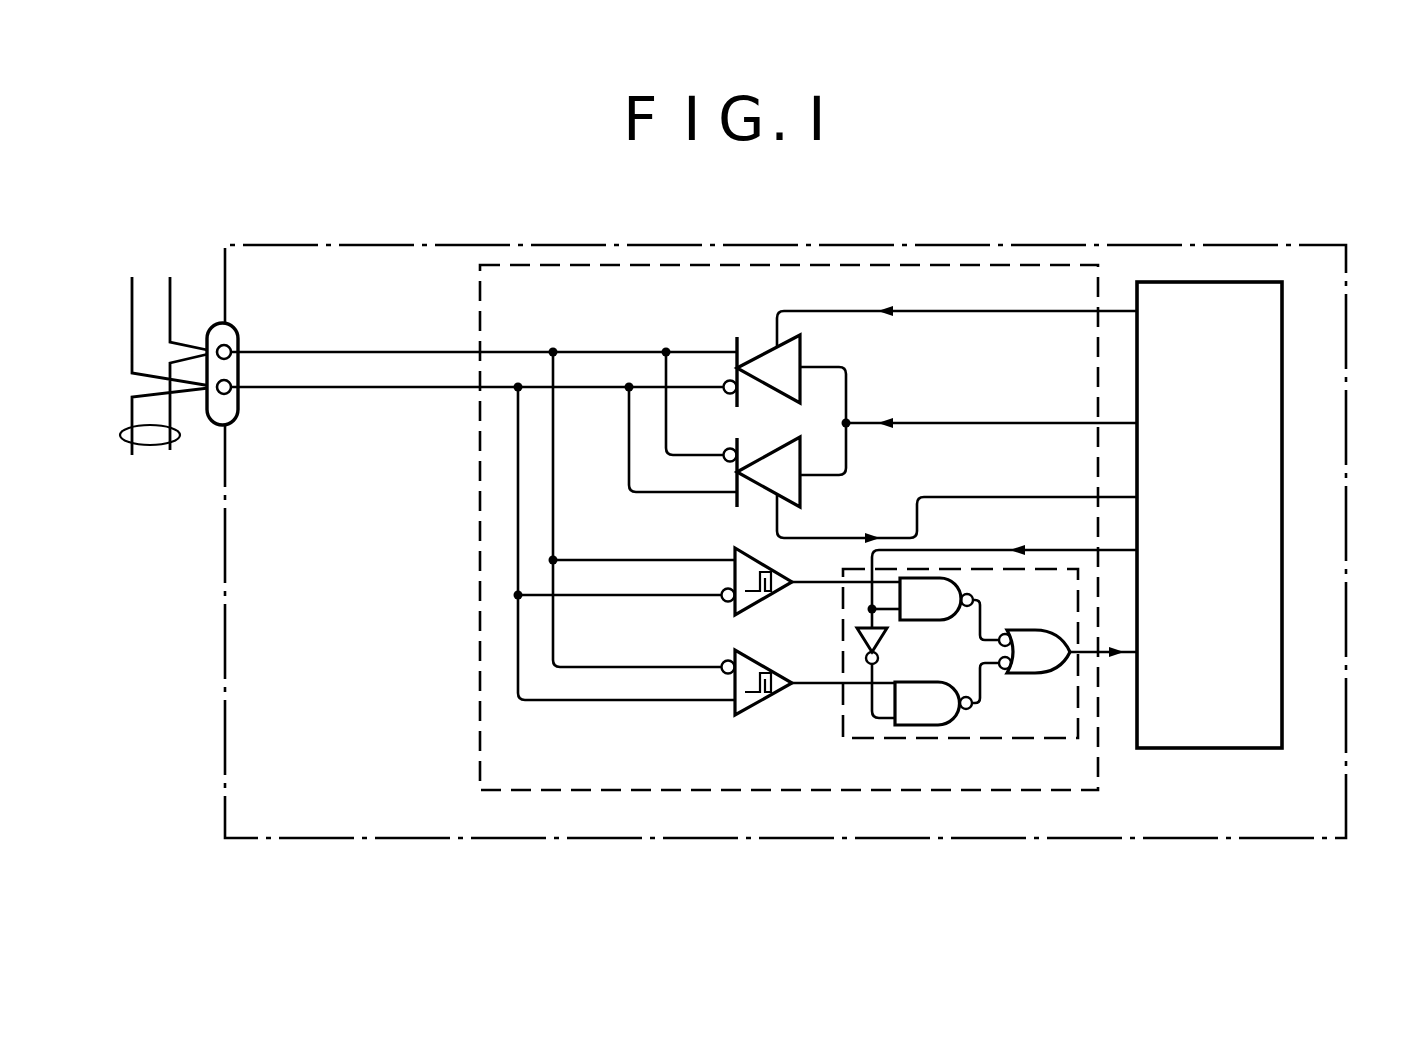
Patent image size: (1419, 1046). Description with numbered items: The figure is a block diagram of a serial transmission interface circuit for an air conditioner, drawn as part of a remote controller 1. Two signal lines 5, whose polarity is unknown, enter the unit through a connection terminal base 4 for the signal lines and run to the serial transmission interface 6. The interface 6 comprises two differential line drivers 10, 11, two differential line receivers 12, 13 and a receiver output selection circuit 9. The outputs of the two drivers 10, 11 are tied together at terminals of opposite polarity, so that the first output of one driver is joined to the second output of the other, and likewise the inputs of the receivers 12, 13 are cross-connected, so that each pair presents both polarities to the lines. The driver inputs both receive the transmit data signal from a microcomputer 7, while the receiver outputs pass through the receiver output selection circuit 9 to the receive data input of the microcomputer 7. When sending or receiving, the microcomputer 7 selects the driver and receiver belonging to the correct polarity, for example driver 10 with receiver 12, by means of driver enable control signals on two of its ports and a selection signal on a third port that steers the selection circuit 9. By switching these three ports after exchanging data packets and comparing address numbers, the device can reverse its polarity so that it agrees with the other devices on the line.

The remote controller 1 is at (220, 517).
The connection terminal base for signal lines 4 is at (238, 323).
The signal lines 5 is at (134, 443).
The serial transmission interface 6 is at (682, 265).
The microcomputer 7 is at (1178, 282).
The receiver output selection circuit 9 is at (982, 738).
The differential line driver 10 is at (797, 336).
The differential line driver 11 is at (787, 495).
The differential line receiver 12 is at (765, 598).
The differential line receiver 13 is at (764, 700).